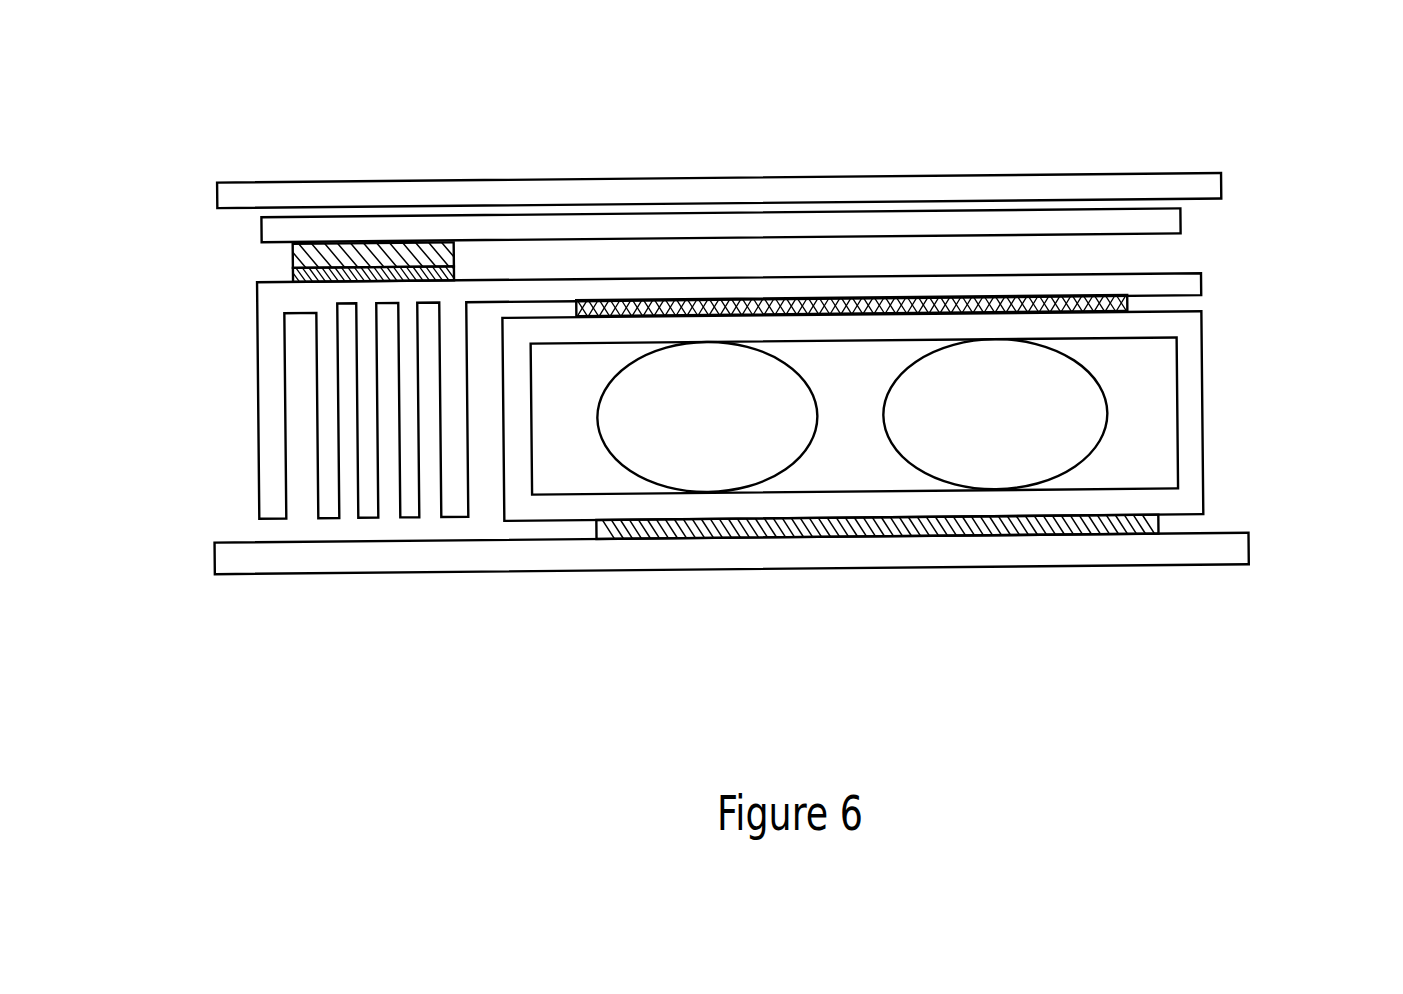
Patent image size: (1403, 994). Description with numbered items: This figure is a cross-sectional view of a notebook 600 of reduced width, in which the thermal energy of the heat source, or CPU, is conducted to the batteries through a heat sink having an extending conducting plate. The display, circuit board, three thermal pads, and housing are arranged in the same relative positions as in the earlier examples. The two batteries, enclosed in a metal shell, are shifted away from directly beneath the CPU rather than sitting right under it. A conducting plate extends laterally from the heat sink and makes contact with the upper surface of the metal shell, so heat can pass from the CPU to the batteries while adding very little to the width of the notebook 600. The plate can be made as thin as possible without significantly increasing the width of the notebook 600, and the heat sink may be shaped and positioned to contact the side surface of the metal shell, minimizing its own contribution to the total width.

The notebook 600 is at (1280, 648).